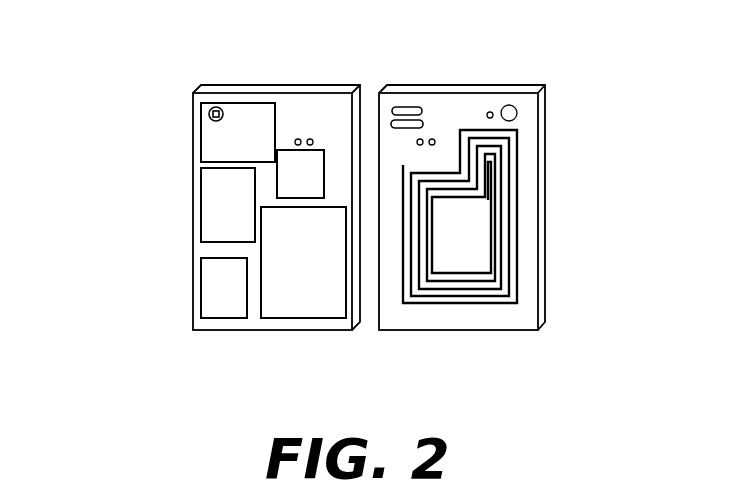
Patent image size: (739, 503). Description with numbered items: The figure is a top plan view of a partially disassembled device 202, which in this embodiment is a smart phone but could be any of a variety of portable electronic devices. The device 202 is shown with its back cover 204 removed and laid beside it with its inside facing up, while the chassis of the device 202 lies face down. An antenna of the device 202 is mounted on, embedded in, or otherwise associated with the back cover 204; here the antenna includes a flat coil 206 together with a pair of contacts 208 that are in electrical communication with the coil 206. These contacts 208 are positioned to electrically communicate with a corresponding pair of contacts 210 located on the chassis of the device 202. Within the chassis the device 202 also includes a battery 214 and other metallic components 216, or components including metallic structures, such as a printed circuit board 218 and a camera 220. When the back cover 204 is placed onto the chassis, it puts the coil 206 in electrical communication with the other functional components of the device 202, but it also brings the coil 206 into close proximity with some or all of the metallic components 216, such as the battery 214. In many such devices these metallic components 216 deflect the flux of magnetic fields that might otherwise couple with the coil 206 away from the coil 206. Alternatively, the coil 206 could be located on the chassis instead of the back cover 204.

The device 202 is at (163, 42).
The back cover 204 is at (505, 46).
The flat coil 206 is at (458, 327).
The pair of contacts 208 is at (428, 120).
The corresponding pair of contacts 210 is at (298, 118).
The battery 214 is at (281, 321).
The metallic components 216 is at (152, 175).
The printed circuit board 218 is at (201, 208).
The camera 220 is at (209, 118).